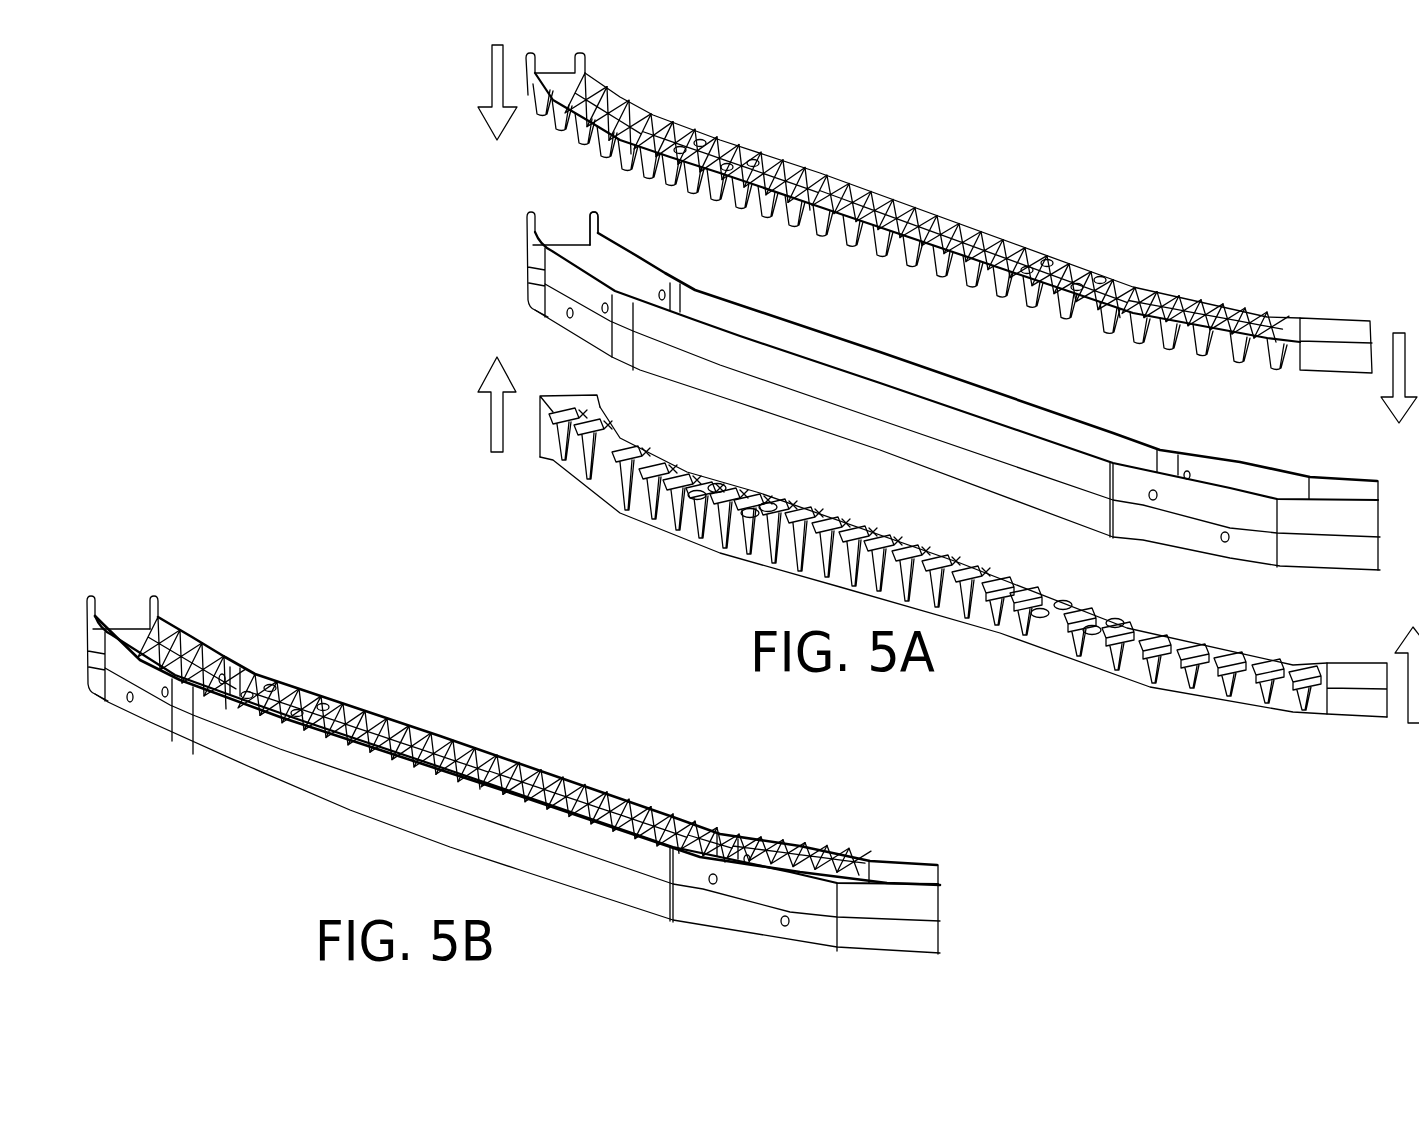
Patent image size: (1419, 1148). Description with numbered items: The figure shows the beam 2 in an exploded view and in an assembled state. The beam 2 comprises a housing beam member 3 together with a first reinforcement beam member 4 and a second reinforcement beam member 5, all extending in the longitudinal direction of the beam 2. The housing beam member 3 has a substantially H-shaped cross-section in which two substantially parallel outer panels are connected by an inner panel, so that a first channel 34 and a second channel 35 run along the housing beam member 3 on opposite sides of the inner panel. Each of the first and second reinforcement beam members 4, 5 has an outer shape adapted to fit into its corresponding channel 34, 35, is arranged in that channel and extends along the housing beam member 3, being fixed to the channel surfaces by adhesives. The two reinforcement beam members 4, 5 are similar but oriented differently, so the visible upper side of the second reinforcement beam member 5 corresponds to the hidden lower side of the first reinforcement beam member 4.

In FIG. 5A, the beam 2 is at (910, 385).
In FIG. 5B, the beam 2 is at (300, 850).
In FIG. 5A, the housing beam member 3 is at (906, 384).
In FIG. 5A, the first reinforcement beam member 4 is at (547, 118).
In FIG. 5A, the second reinforcement beam member 5 is at (553, 463).
In FIG. 5A, the first channel 34 is at (563, 227).
In FIG. 5A, the second channel 35 is at (906, 435).